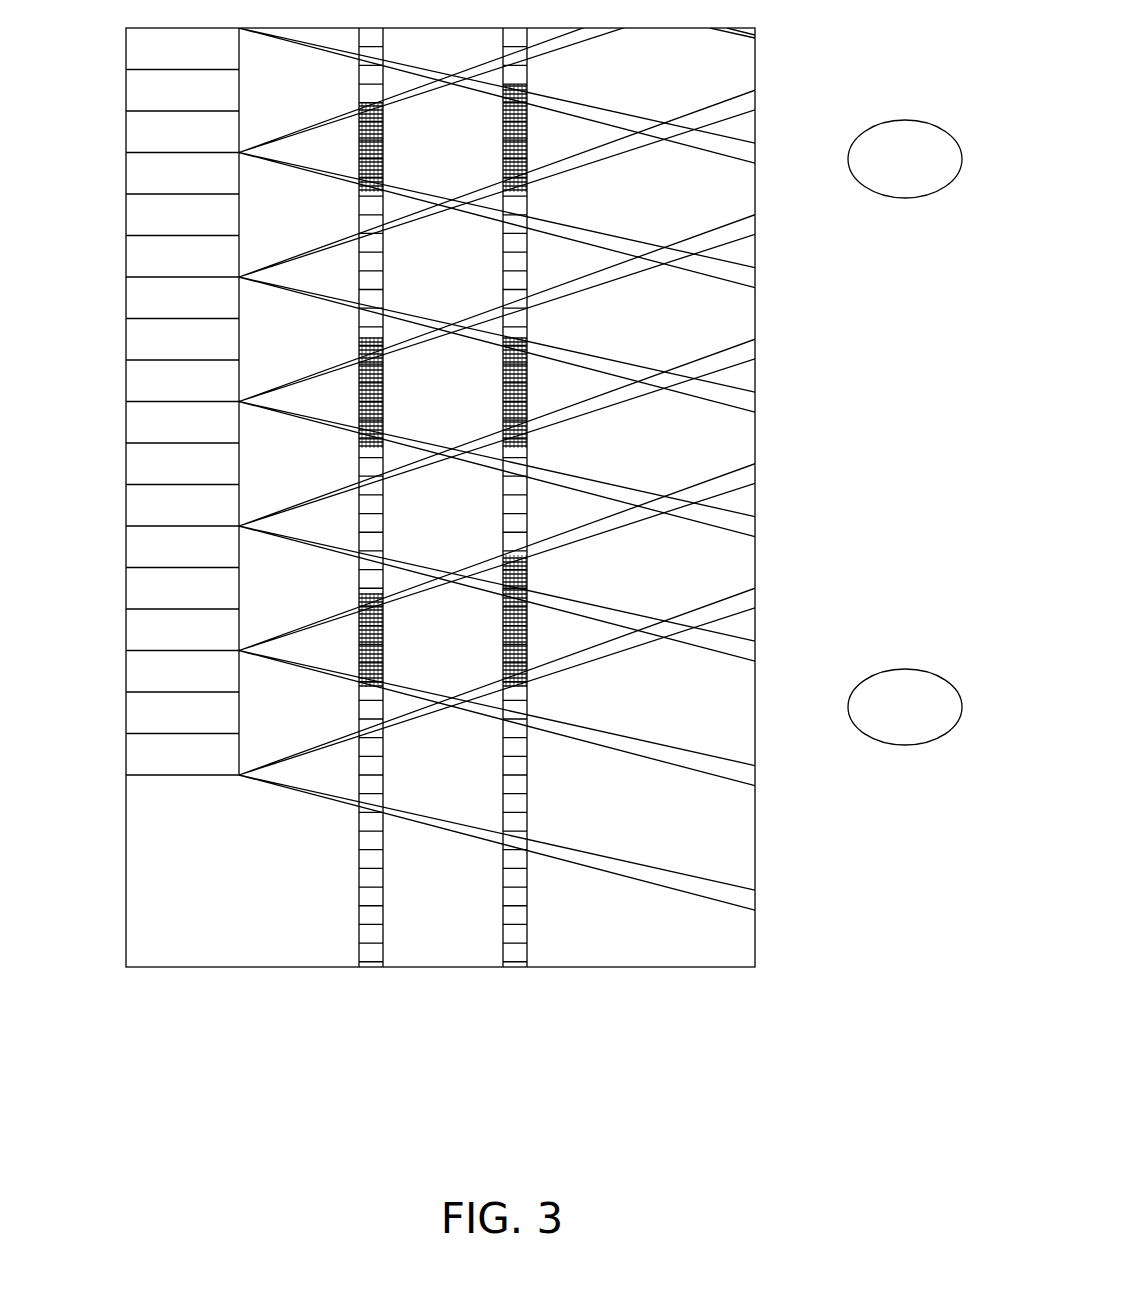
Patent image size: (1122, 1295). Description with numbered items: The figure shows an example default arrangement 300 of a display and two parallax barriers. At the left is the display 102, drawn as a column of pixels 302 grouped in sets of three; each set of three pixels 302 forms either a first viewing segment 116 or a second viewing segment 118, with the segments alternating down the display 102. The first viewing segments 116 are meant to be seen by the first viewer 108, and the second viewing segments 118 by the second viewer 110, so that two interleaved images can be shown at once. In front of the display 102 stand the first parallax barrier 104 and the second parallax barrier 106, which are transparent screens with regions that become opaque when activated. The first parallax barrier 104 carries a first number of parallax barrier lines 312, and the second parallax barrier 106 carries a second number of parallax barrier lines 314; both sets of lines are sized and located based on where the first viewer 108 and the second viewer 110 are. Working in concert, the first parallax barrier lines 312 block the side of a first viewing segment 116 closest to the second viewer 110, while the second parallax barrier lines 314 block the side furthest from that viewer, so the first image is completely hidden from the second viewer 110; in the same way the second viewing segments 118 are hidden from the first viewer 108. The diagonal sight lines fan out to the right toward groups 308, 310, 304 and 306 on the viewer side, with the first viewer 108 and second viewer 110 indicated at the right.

The default arrangement 300 is at (479, 1186).
The pixels 302 is at (182, 405).
The display 102 is at (122, 790).
The first parallax barrier 104 is at (353, 979).
The second parallax barrier 106 is at (498, 979).
The first viewer 108 is at (905, 707).
The second viewer 110 is at (905, 159).
The first viewing segments 116 is at (118, 148).
The second viewing segments 118 is at (118, 23).
The output channel group 304 is at (766, 530).
The output channel group 306 is at (766, 640).
The output channel group 308 is at (766, 82).
The output channel group 310 is at (766, 223).
The first number of parallax barrier lines 312 is at (383, 131).
The second number of parallax barrier lines 314 is at (527, 144).